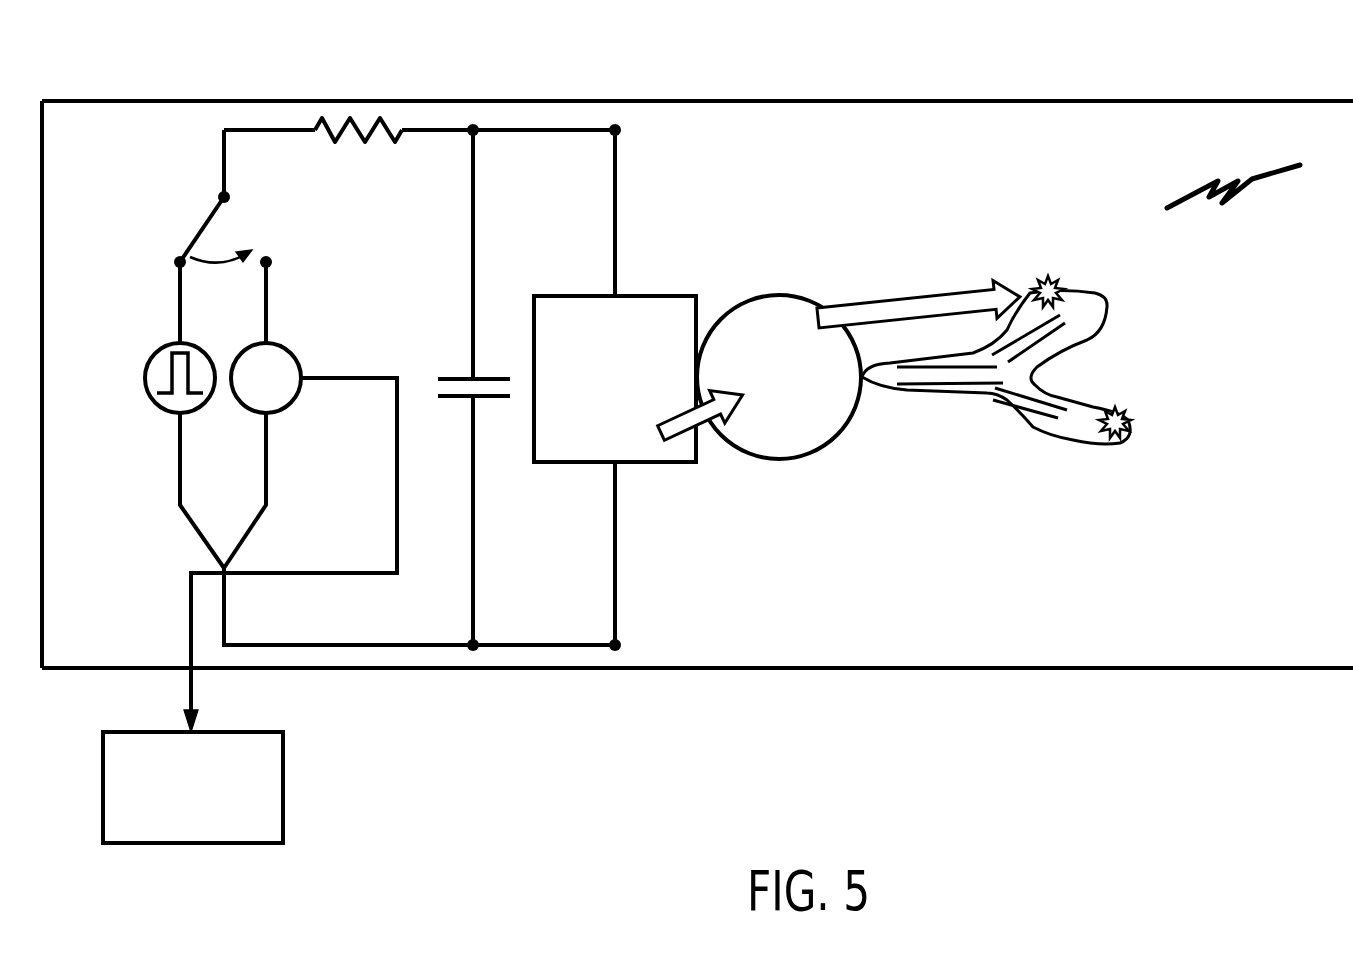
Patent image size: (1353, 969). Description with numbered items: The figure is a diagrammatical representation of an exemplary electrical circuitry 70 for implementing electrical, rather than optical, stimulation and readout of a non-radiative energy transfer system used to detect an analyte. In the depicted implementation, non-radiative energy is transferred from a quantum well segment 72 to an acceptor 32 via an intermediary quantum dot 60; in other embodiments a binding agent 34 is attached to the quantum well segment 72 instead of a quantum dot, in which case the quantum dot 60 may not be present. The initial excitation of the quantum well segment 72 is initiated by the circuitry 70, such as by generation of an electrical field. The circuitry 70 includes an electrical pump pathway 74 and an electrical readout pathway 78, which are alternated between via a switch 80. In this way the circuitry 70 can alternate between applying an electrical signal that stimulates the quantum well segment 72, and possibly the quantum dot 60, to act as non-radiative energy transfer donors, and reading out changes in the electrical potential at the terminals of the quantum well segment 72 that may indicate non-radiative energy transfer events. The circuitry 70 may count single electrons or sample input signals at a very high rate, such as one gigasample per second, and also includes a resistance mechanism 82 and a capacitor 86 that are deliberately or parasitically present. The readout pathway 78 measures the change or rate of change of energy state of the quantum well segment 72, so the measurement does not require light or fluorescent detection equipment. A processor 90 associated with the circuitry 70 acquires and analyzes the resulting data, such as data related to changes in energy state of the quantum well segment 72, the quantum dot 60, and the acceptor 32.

The electrical circuitry 70 is at (813, 82).
The resistance mechanism 82 is at (340, 130).
The switch 80 is at (205, 225).
The electrical pump pathway 74 is at (153, 352).
The electrical readout pathway 78 is at (278, 345).
The capacitor 86 is at (453, 378).
The quantum well segment 72 is at (645, 297).
The quantum dot 60 is at (812, 453).
The binding agent 34 is at (947, 393).
The acceptor 32 is at (1072, 288).
The processor 90 is at (283, 787).